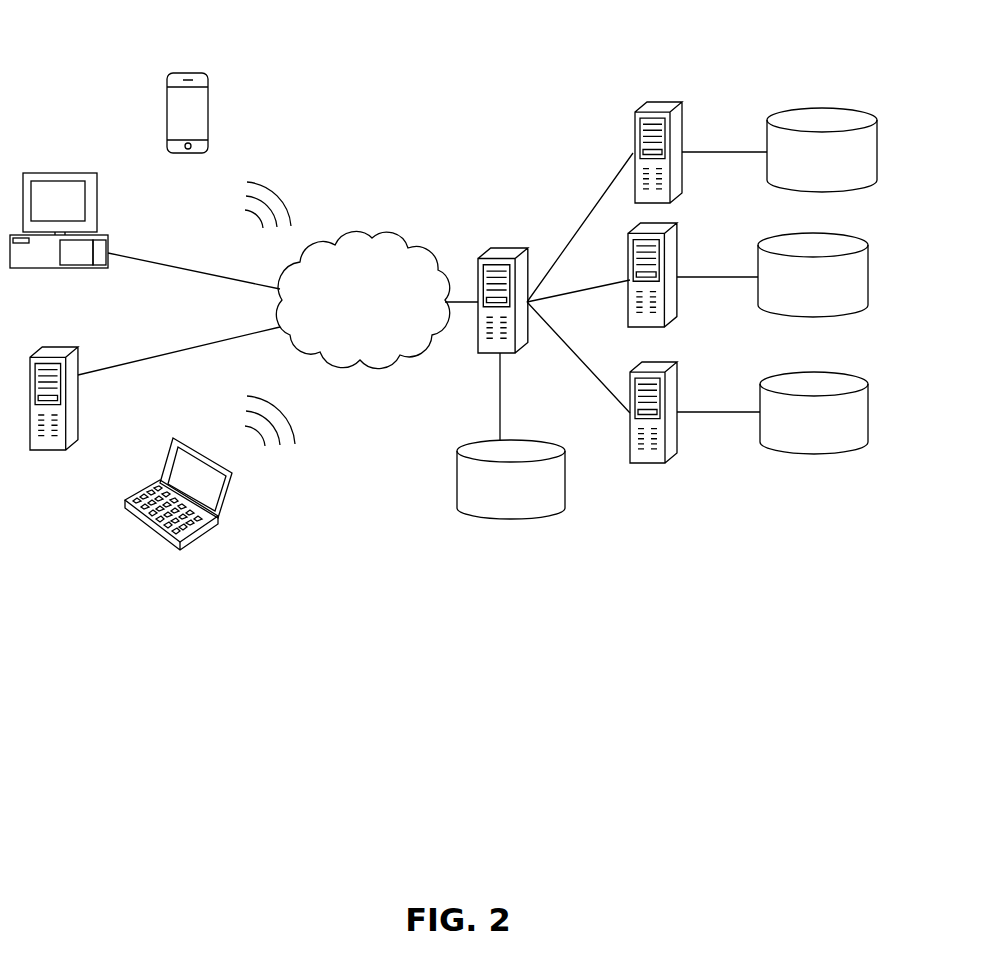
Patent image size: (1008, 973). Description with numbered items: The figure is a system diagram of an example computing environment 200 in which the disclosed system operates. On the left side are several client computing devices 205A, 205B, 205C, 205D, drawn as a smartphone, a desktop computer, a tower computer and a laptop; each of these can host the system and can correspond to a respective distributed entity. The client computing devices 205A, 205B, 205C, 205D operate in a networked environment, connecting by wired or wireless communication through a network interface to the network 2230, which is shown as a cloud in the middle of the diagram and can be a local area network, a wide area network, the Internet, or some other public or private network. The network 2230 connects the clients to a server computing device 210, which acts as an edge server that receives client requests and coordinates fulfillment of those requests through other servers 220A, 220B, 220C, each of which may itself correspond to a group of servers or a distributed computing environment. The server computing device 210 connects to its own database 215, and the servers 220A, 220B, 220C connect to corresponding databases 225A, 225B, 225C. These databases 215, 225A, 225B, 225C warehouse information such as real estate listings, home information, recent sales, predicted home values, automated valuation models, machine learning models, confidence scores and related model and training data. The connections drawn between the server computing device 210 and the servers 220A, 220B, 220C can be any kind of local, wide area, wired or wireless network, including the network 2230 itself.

The environment 200 is at (90, 40).
The client computing device 205A is at (210, 77).
The client computing device 205B is at (98, 178).
The client computing device 205C is at (72, 350).
The client computing device 205D is at (228, 503).
The network 2230 is at (372, 240).
The server computing device 210 is at (517, 249).
The database 215 is at (523, 440).
The server 220A is at (679, 104).
The server 220B is at (672, 224).
The server 220C is at (672, 363).
The database 225A is at (833, 110).
The database 225B is at (825, 234).
The database 225C is at (840, 382).